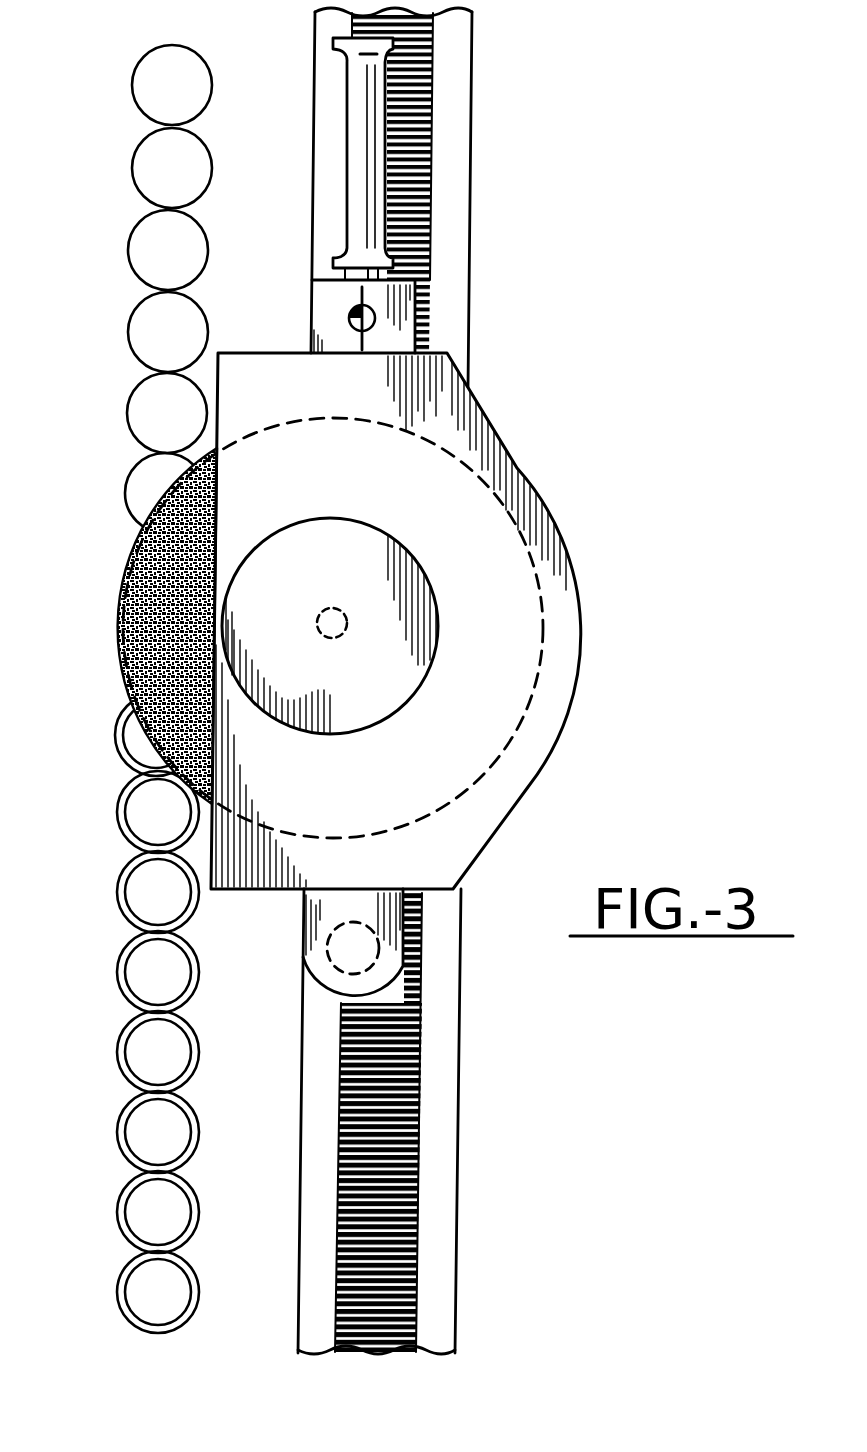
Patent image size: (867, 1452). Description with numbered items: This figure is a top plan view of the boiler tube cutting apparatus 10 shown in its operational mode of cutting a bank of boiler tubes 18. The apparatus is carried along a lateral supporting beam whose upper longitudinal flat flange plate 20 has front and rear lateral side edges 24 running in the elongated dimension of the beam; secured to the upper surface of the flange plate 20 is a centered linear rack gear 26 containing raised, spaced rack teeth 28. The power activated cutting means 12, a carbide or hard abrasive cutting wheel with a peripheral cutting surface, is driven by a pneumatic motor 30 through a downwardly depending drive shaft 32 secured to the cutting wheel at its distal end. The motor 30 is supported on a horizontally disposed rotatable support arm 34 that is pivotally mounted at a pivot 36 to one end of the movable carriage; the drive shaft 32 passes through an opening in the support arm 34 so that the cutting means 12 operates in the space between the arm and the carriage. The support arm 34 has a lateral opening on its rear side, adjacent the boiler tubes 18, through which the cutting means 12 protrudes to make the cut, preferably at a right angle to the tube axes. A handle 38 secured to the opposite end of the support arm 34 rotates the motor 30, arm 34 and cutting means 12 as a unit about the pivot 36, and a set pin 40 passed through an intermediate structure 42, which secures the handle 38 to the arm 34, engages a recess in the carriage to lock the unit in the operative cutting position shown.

The boiler tube cutting apparatus 10 is at (446, 681).
The cutting means 12 is at (130, 556).
The boiler tubes 18 is at (130, 233).
The upper flange plate 20 is at (393, 681).
The lateral side edges 24 is at (313, 195).
The linear rack gear 26 is at (430, 255).
The rack teeth 28 is at (427, 68).
The motor 30 is at (433, 641).
The drive shaft 32 is at (336, 638).
The rotatable support arm 34 is at (514, 470).
The pivot 36 is at (372, 962).
The handle 38 is at (355, 150).
The set pin 40 is at (350, 326).
The intermediate structure 42 is at (312, 296).